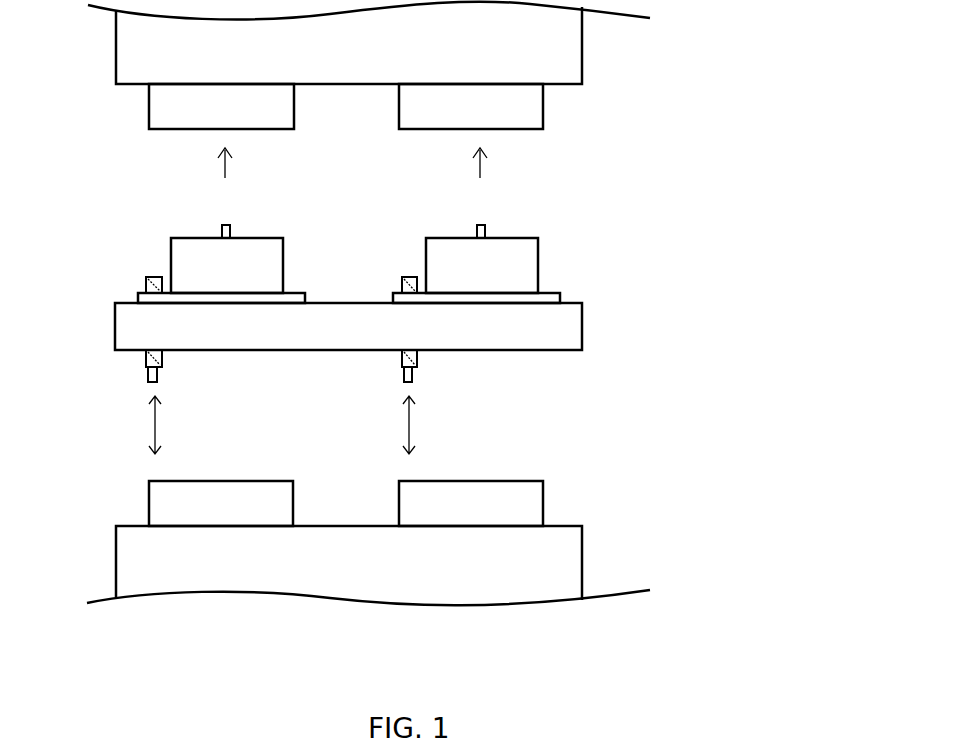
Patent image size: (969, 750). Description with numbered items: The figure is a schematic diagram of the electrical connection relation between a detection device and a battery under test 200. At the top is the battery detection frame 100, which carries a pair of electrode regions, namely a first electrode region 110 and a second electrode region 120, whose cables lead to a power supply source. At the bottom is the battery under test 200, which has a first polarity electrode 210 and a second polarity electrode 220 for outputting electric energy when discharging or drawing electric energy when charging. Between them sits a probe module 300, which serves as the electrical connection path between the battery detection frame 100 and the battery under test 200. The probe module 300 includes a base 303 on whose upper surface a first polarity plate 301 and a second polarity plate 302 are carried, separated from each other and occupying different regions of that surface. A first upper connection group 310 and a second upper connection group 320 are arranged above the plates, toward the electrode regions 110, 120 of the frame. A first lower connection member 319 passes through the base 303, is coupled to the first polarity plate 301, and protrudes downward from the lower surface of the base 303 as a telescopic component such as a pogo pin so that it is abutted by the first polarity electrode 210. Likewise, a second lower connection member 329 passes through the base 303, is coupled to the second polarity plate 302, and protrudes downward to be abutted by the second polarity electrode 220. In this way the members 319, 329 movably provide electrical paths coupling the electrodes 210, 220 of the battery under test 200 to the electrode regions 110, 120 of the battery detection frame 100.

The battery detection frame 100 is at (632, 66).
The first electrode region 110 is at (543, 114).
The second electrode region 120 is at (149, 106).
The battery under test 200 is at (631, 551).
The first polarity electrode 210 is at (543, 503).
The second polarity electrode 220 is at (149, 496).
The probe module 300 is at (680, 290).
The first polarity plate 301 is at (557, 293).
The second polarity plate 302 is at (138, 297).
The base 303 is at (582, 330).
The first upper connection group 310 is at (540, 251).
The second upper connection group 320 is at (171, 241).
The first lower connection member 319 is at (417, 366).
The second lower connection member 329 is at (146, 366).